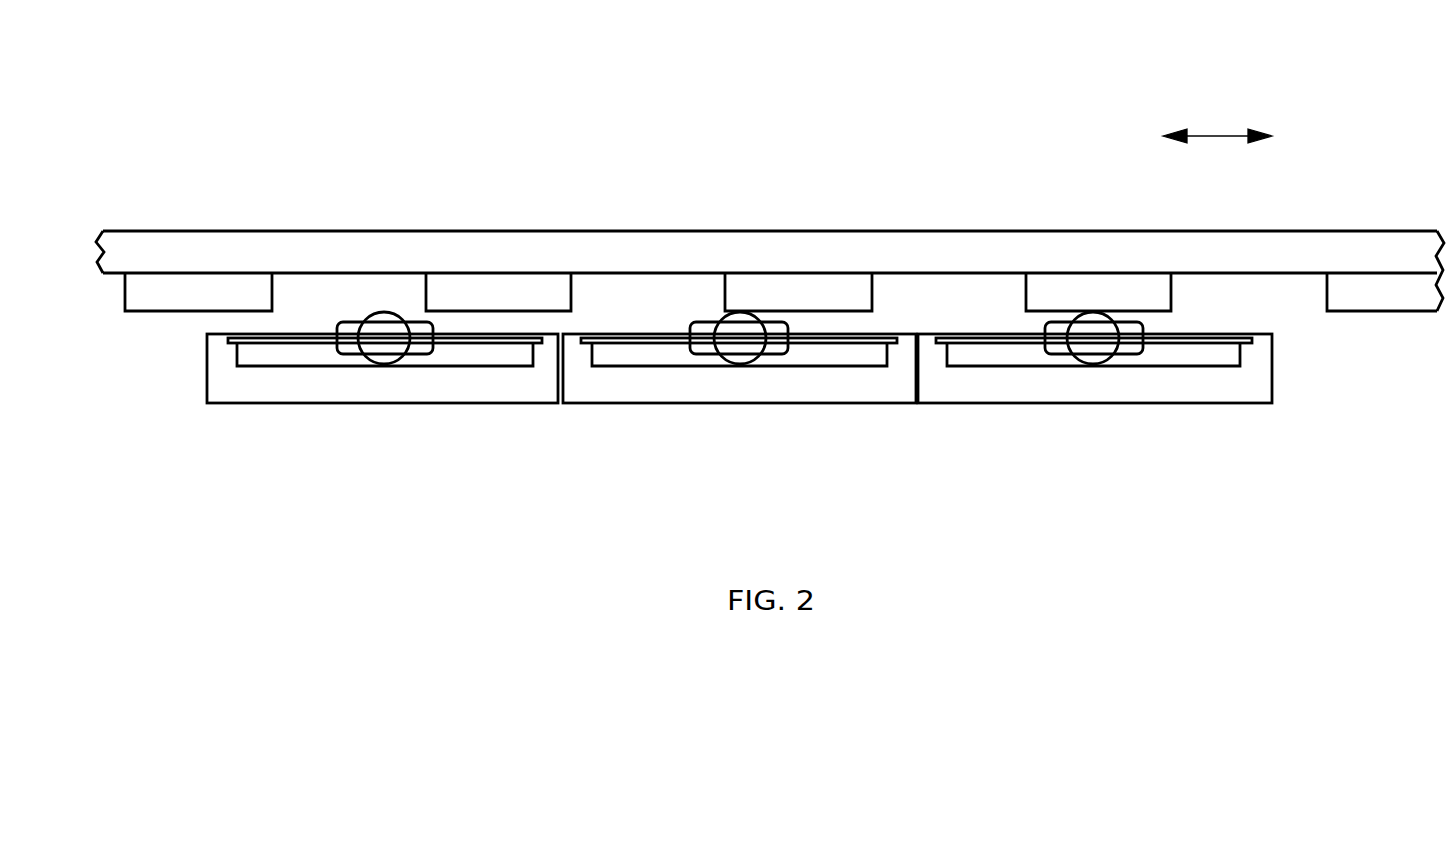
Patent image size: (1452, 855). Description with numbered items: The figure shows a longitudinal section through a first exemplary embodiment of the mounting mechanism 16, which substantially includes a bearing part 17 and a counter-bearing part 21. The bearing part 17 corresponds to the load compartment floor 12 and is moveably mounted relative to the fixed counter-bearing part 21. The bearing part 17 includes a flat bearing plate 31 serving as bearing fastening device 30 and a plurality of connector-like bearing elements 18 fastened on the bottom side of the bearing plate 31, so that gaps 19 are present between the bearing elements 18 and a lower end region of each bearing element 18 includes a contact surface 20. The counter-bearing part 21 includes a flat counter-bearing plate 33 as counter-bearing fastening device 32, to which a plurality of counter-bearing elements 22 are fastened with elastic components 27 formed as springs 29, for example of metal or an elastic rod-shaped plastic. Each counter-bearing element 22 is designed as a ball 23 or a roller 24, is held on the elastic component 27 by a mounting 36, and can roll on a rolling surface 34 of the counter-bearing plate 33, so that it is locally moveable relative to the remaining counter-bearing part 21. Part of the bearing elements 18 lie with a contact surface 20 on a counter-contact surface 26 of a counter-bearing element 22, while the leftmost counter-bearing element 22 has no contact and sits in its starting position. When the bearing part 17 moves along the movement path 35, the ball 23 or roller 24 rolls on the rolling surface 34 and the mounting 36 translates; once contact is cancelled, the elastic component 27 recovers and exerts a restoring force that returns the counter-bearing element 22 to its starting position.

The load compartment floor 12 is at (518, 247).
The mounting mechanism 16 is at (1072, 77).
The bearing part 17 is at (781, 226).
The bearing element 18 is at (178, 282).
The gap 19 is at (344, 292).
The contact surface 20 is at (153, 315).
The counter-bearing part 21 is at (739, 343).
The counter-bearing element 22 is at (762, 397).
The ball 23 is at (762, 397).
The roller 24 is at (384, 364).
The counter-contact surface 26 is at (392, 296).
The elastic component 27 is at (744, 423).
The spring 29 is at (477, 341).
The bearing fastening device 30 is at (856, 192).
The bearing plate 31 is at (856, 243).
The counter-bearing fastening device 32 is at (739, 421).
The counter-bearing plate 33 is at (323, 392).
The rolling surface 34 is at (272, 350).
The movement path 35 is at (1217, 133).
The mounting 36 is at (337, 351).